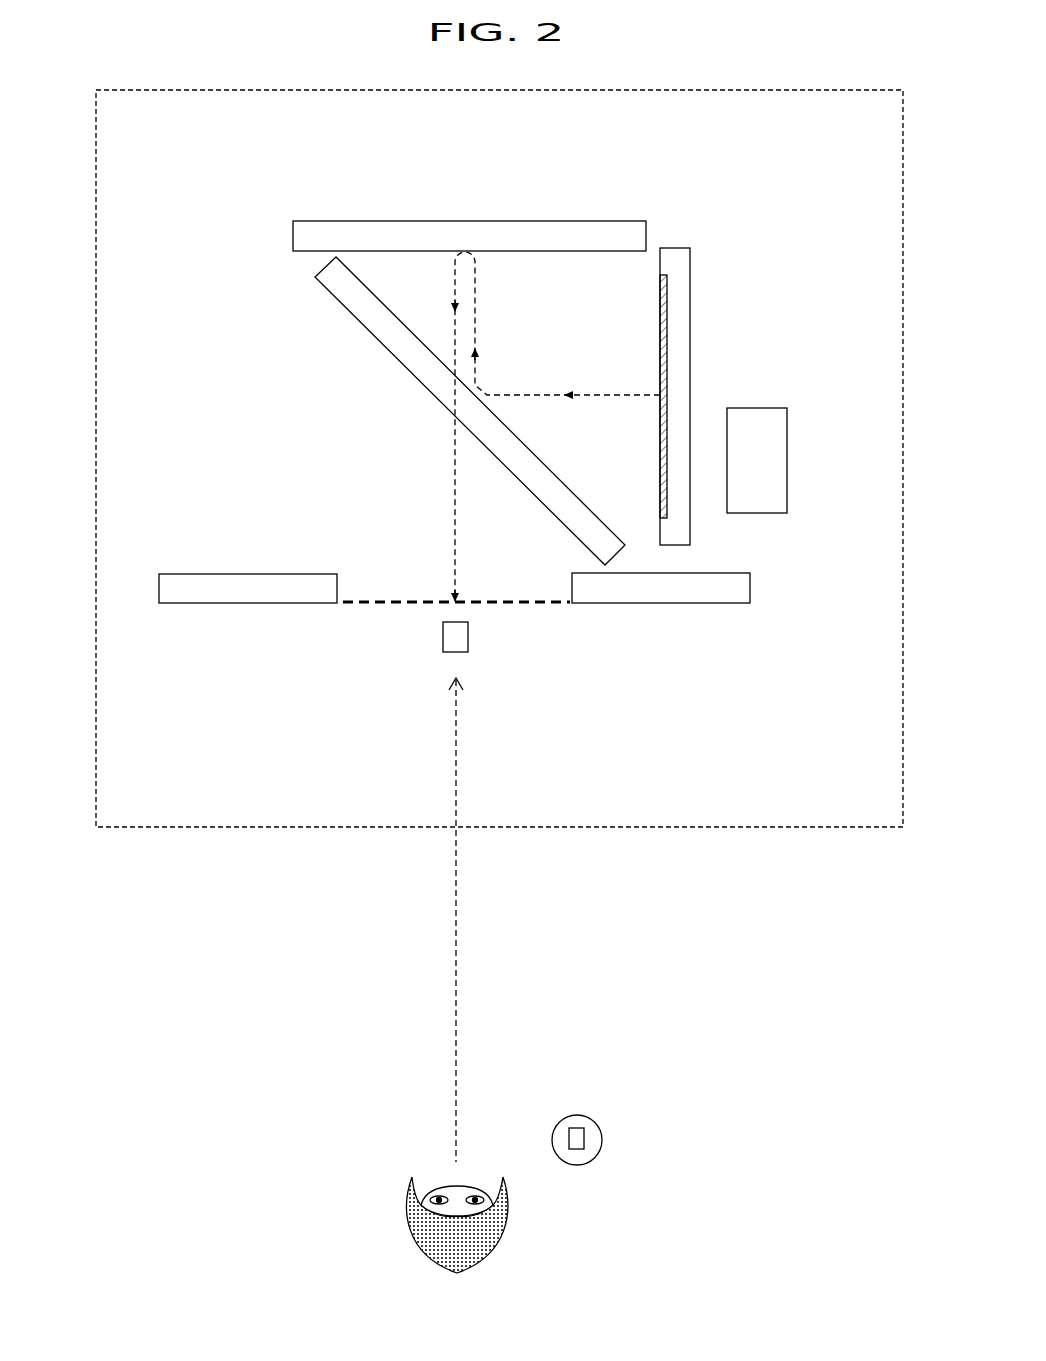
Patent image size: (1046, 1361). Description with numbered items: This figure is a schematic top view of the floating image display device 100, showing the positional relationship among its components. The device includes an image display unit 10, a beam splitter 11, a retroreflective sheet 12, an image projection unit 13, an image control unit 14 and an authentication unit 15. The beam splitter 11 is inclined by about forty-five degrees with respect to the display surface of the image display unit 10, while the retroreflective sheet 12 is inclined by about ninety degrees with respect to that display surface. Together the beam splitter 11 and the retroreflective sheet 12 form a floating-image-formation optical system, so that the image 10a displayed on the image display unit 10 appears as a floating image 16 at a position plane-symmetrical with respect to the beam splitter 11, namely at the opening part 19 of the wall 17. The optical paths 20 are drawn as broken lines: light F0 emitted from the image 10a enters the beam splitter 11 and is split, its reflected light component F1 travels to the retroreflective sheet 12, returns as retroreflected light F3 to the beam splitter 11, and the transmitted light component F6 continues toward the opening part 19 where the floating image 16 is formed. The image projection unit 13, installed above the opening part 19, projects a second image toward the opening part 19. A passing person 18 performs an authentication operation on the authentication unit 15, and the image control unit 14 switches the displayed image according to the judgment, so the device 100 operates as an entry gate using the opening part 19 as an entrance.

The floating image display device 100 is at (208, 827).
The retroreflective sheet 12 is at (468, 221).
The beam splitter 11 is at (355, 320).
The image display unit 10 is at (690, 362).
The image 10a is at (667, 313).
The image control unit 14 is at (787, 480).
The wall 17 is at (189, 574).
The floating image 16 is at (525, 608).
The image projection unit 13 is at (450, 640).
The opening part 19 is at (368, 620).
The optical paths 20 is at (455, 472).
The authentication unit 15 is at (590, 1135).
The passing person 18 is at (420, 1245).
The light F0 is at (572, 394).
The reflected light component F1 is at (475, 365).
The retroreflected light F3 is at (455, 311).
The transmitted light component F6 is at (453, 443).